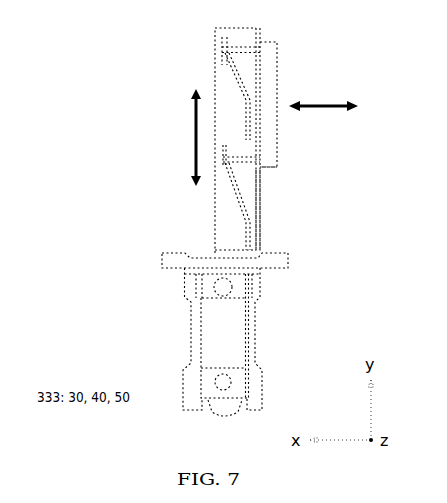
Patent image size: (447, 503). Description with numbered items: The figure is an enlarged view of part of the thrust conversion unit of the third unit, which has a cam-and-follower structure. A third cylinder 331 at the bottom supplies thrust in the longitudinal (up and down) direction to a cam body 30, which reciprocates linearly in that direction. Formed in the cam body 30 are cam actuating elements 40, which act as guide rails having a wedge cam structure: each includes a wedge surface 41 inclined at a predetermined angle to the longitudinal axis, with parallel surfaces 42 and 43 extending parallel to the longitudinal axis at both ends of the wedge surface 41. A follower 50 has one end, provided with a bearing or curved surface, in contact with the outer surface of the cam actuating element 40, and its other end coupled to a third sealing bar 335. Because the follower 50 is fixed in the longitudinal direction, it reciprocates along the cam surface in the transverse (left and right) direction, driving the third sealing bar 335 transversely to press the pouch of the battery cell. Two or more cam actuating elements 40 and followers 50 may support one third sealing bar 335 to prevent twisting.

The cam body 30 is at (218, 227).
The cam actuating element 40 is at (224, 97).
The follower 50 is at (224, 52).
The third sealing bar 335 is at (278, 42).
The parallel surface 42 is at (262, 168).
The wedge surface 41 is at (260, 197).
The parallel surface 43 is at (260, 228).
The third cylinder 331 is at (253, 318).